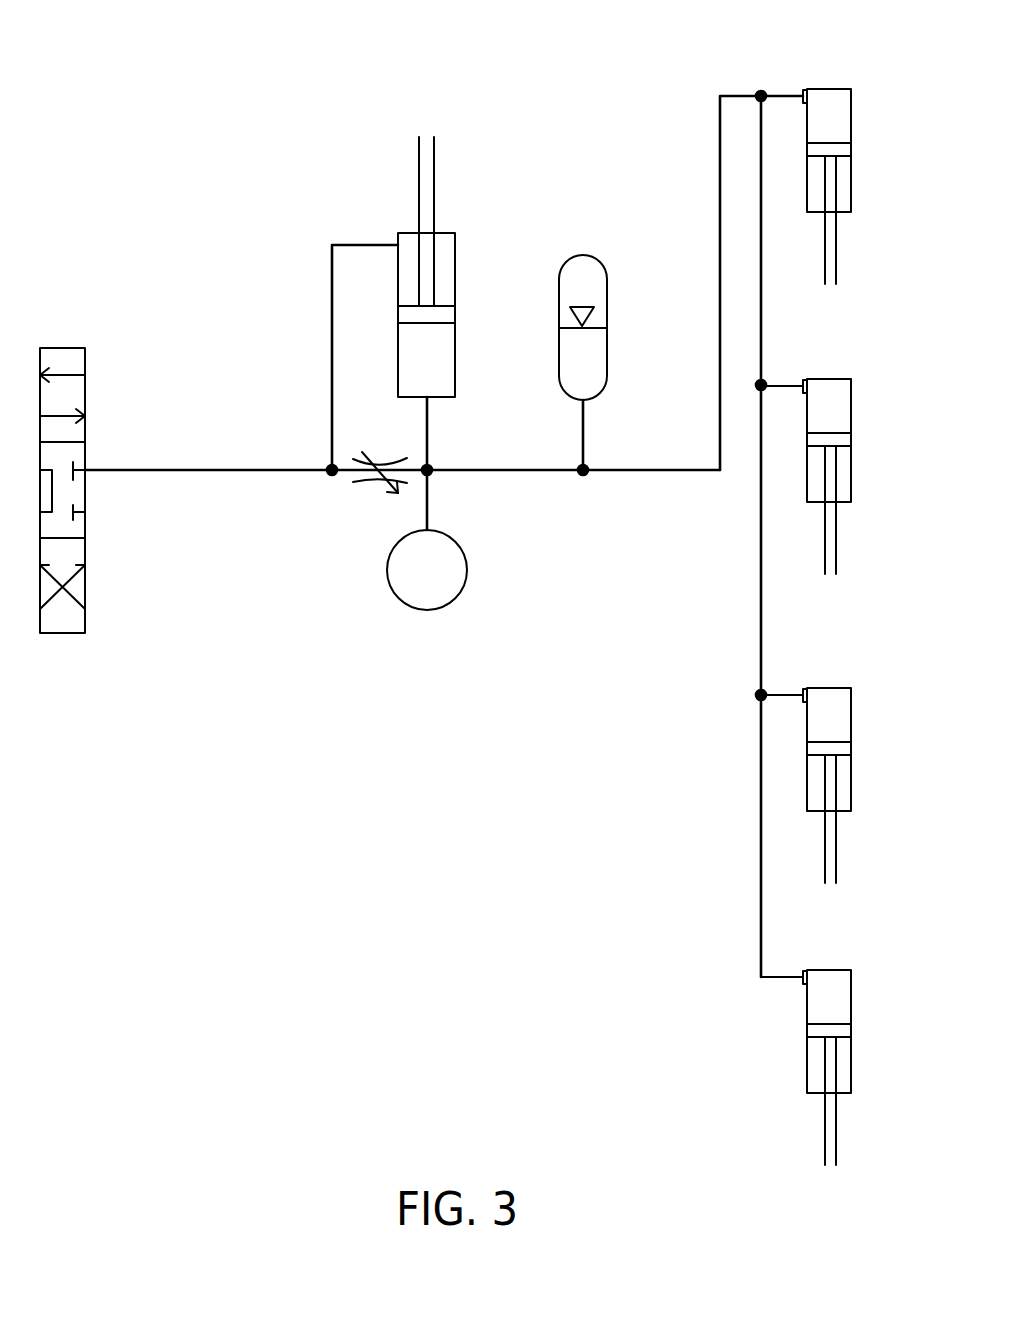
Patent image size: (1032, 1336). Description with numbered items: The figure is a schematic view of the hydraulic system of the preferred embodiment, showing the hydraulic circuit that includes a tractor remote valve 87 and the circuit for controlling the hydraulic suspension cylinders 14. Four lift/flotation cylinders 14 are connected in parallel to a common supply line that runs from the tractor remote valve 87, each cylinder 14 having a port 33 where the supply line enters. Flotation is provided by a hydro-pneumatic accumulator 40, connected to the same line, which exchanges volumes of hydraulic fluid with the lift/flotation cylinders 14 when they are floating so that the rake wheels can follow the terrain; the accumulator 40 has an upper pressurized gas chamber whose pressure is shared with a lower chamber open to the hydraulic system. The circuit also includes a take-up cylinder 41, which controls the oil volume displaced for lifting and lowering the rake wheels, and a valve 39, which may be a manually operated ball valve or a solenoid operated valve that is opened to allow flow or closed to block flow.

The hydraulic suspension cylinder 14 is at (852, 172).
The cylinder port 33 is at (803, 90).
The valve 39 is at (350, 482).
The hydro-pneumatic accumulator 40 is at (607, 300).
The take-up cylinder 41 is at (456, 243).
The tractor remote valve 87 is at (85, 362).